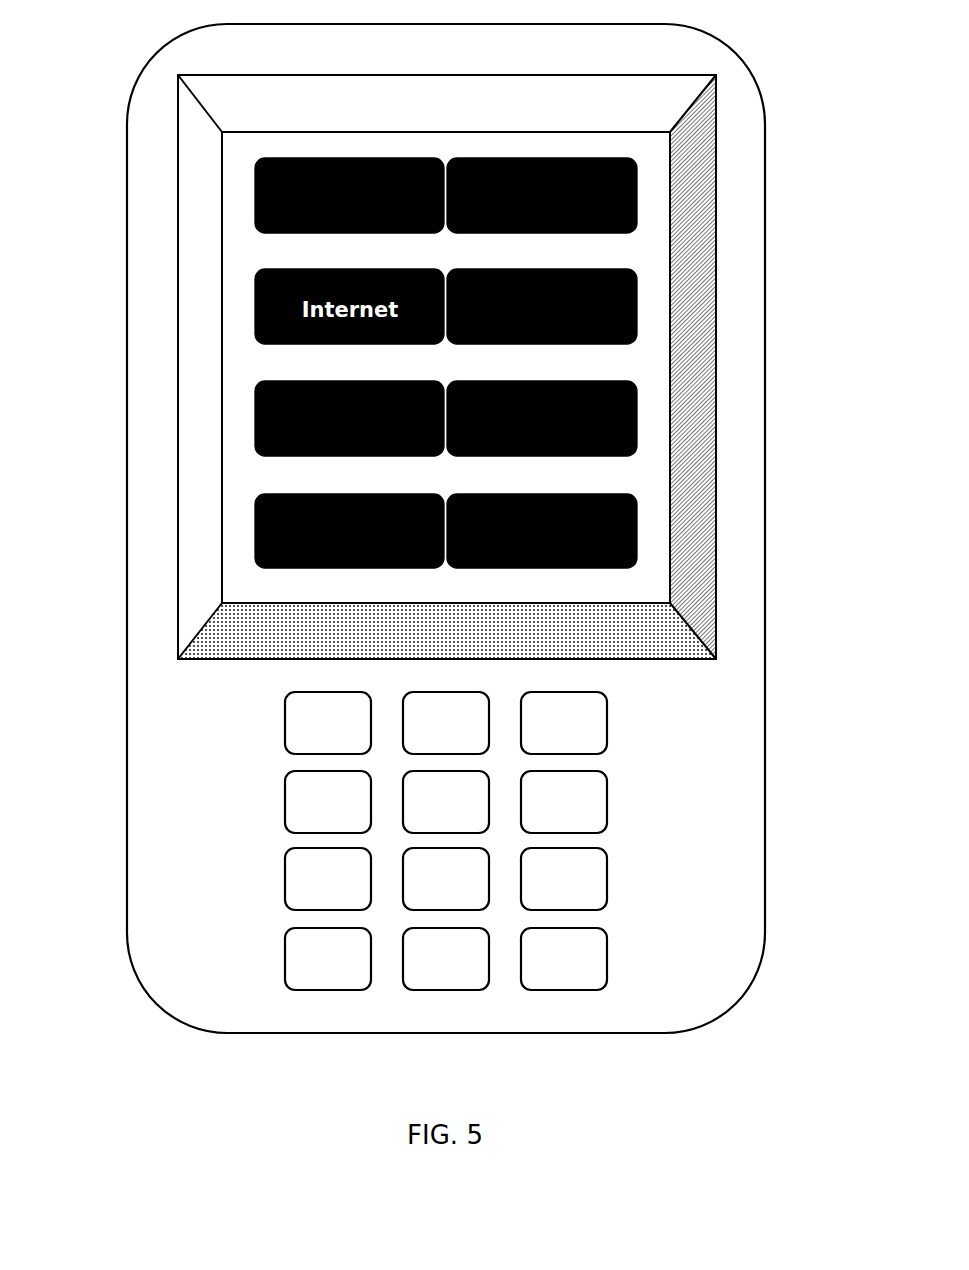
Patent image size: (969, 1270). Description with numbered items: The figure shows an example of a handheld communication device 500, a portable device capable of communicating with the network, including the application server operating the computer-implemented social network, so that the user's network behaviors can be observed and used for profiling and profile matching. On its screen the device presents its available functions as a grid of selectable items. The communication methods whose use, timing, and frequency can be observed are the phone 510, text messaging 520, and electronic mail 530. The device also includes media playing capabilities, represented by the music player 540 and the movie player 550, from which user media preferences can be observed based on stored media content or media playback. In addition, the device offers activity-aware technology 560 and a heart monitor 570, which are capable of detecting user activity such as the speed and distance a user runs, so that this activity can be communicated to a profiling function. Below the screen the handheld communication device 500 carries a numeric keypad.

The handheld communication device 500 is at (113, 1053).
The phone 510 is at (248, 190).
The text messaging 520 is at (645, 197).
The electronic mail 530 is at (645, 303).
The music player 540 is at (248, 410).
The movie player 550 is at (647, 408).
The activity-aware technology 560 is at (248, 528).
The heart monitor 570 is at (647, 527).